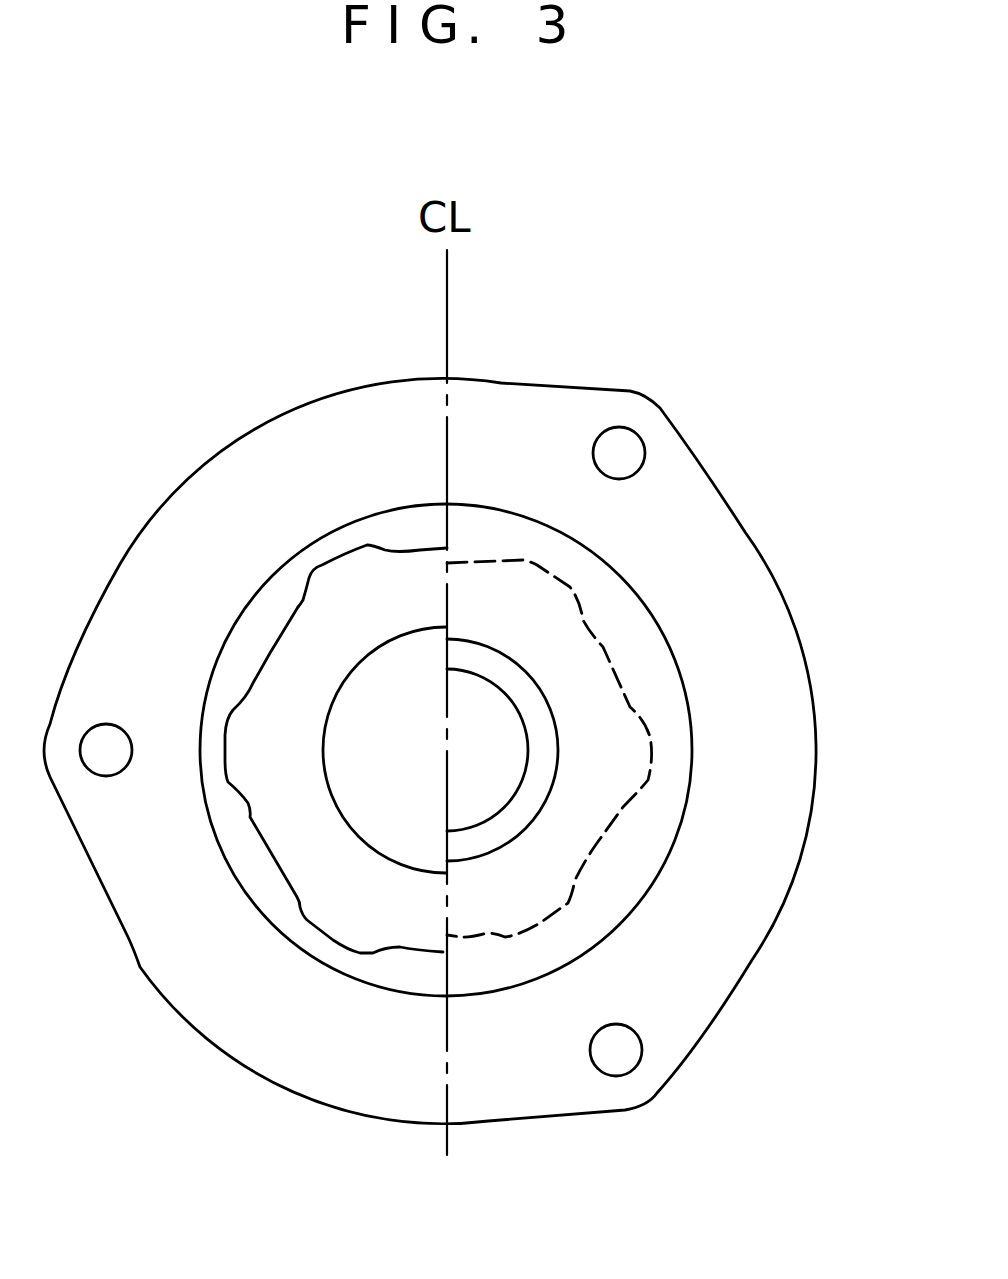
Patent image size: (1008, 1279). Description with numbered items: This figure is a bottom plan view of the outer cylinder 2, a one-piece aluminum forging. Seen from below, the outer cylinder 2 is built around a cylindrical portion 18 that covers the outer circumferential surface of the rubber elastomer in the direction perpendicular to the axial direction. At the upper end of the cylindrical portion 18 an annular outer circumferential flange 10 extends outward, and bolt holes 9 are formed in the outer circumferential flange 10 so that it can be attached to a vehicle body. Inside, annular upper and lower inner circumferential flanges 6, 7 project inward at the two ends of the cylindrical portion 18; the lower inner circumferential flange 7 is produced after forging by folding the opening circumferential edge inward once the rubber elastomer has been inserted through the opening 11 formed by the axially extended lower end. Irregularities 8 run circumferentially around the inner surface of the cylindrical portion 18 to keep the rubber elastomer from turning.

The outer cylinder 2 is at (573, 377).
The upper inner circumferential flange 6 is at (357, 597).
The lower inner circumferential flange 7 is at (553, 823).
The irregularities 8 is at (270, 645).
The bolt holes 9 is at (622, 450).
The outer circumferential flange 10 is at (242, 472).
The opening 11 is at (377, 797).
The cylindrical portion 18 is at (643, 658).